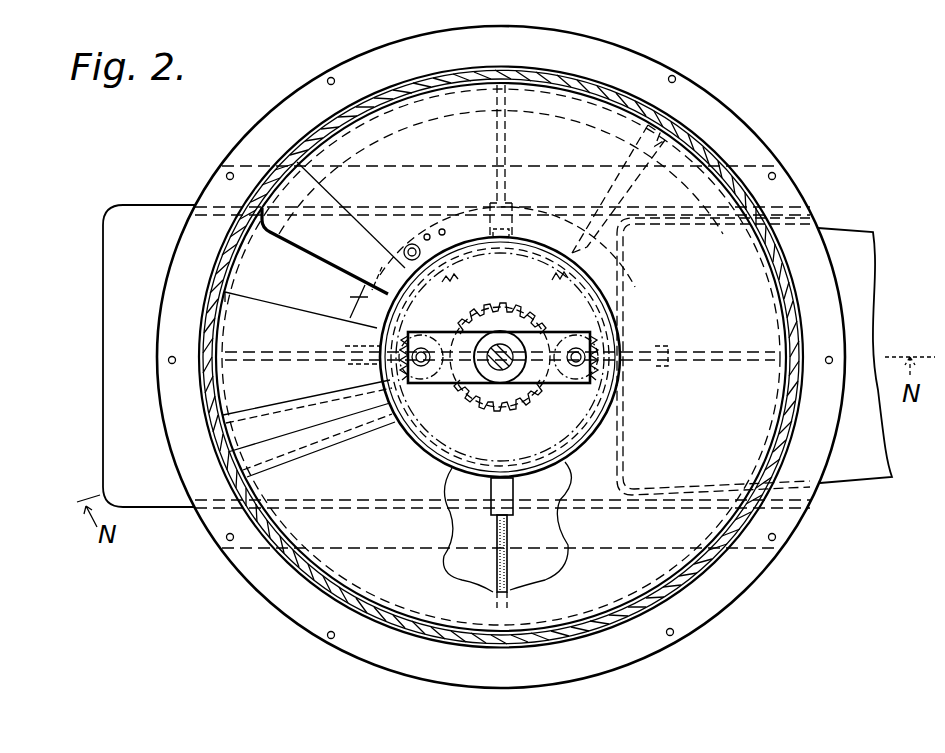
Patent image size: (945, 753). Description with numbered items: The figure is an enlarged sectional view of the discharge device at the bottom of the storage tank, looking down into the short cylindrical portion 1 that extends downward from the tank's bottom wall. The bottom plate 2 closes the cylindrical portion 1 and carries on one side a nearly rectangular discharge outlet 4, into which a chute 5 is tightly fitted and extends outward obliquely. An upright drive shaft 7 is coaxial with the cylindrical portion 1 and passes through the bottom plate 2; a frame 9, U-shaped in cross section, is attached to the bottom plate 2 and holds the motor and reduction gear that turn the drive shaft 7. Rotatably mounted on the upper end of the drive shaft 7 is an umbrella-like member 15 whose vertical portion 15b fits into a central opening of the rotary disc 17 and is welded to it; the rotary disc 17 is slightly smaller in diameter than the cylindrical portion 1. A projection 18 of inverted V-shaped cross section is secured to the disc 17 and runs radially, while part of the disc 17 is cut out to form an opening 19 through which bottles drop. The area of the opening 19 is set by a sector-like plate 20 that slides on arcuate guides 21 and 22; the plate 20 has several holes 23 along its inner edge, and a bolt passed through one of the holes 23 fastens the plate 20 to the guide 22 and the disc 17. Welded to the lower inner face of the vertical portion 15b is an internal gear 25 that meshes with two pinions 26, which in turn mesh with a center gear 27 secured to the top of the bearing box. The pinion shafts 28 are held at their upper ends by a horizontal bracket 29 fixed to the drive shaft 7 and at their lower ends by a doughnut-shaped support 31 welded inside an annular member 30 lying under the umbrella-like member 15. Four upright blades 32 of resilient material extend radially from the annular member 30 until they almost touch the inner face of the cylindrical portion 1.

The cylindrical portion 1 is at (707, 565).
The bottom plate 2 is at (538, 540).
The discharge outlet 4 is at (727, 227).
The chute 5 is at (830, 478).
The drive shaft 7 is at (467, 367).
The frame 9 is at (103, 345).
The umbrella-like member 15 is at (602, 263).
The vertical portion 15b is at (610, 312).
The rotary disc 17 is at (702, 455).
The projection 18 is at (312, 437).
The opening 19 is at (305, 295).
The sector-like plate 20 is at (283, 227).
The arcuate guide 21 is at (703, 142).
The arcuate guide 22 is at (343, 301).
The holes 23 is at (400, 258).
The internal gear 25 is at (607, 377).
The pinions 26 is at (565, 380).
The center gear 27 is at (477, 390).
The pinion shafts 28 is at (600, 353).
The horizontal bracket 29 is at (463, 337).
The annular member 30 is at (517, 240).
The support 31 is at (523, 445).
The upright blades 32 is at (497, 142).